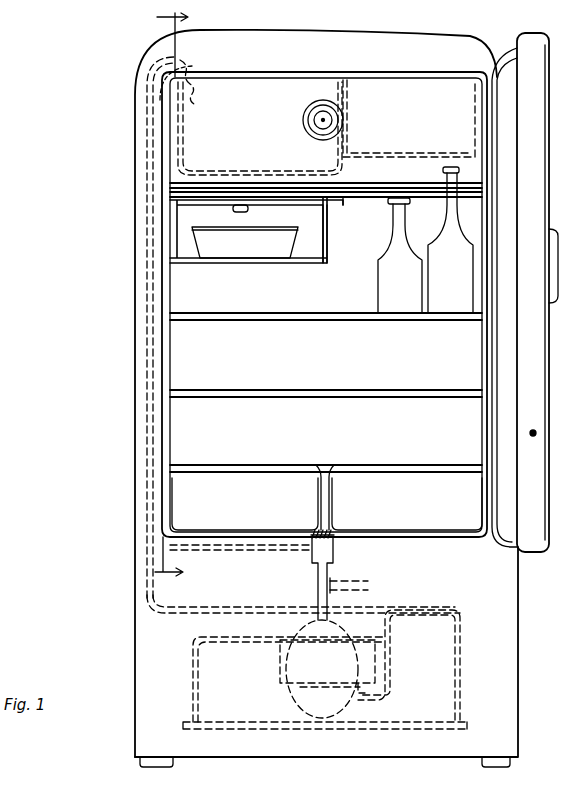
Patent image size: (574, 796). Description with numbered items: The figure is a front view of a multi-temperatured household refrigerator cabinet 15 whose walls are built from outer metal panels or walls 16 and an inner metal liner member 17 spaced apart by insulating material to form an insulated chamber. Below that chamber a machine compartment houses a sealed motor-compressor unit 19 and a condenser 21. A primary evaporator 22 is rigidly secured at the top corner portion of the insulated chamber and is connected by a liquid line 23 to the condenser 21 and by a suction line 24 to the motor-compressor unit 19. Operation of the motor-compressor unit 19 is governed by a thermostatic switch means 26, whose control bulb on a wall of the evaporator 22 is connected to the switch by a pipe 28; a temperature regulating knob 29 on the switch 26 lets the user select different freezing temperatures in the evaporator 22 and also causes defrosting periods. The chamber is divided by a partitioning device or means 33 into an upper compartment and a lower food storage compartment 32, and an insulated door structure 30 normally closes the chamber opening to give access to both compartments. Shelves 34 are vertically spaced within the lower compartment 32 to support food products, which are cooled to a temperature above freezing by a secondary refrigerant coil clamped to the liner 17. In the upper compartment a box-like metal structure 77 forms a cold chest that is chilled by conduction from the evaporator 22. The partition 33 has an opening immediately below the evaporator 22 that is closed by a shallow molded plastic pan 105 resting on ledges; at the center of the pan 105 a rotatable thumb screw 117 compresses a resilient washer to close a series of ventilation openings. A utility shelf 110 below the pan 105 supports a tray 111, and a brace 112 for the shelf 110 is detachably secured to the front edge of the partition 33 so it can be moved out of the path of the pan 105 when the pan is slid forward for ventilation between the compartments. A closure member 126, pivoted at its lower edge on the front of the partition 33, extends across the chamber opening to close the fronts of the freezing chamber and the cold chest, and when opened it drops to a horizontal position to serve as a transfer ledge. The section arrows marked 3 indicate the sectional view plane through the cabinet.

The section line 3- 3 is at (181, 295).
The refrigerator cabinet 15 is at (135, 297).
The outer metal panels or walls 16 is at (147, 345).
The inner metal liner member 17 is at (172, 425).
The sealed motor-compressor unit 19 is at (280, 663).
The condenser 21 is at (263, 717).
The primary evaporator 22 is at (235, 173).
The liquid line 23 is at (463, 647).
The suction line 24 is at (393, 643).
The thermostatic switch means 26 is at (335, 548).
The pipe 28 is at (278, 548).
The temperature regulating knob 29 is at (337, 533).
The insulated door structure 30 is at (523, 257).
The lower food storage compartment 32 is at (387, 258).
The partitioning device or means 33 is at (422, 228).
The shelves 34 is at (303, 387).
The box-like metal structure 77 is at (393, 157).
The shallow pan 105 is at (333, 200).
The utility shelf 110 is at (310, 265).
The tray 111 is at (245, 242).
The brace 112 is at (328, 233).
The rotatable thumb screw 117 is at (250, 208).
The closure member 126 is at (285, 107).